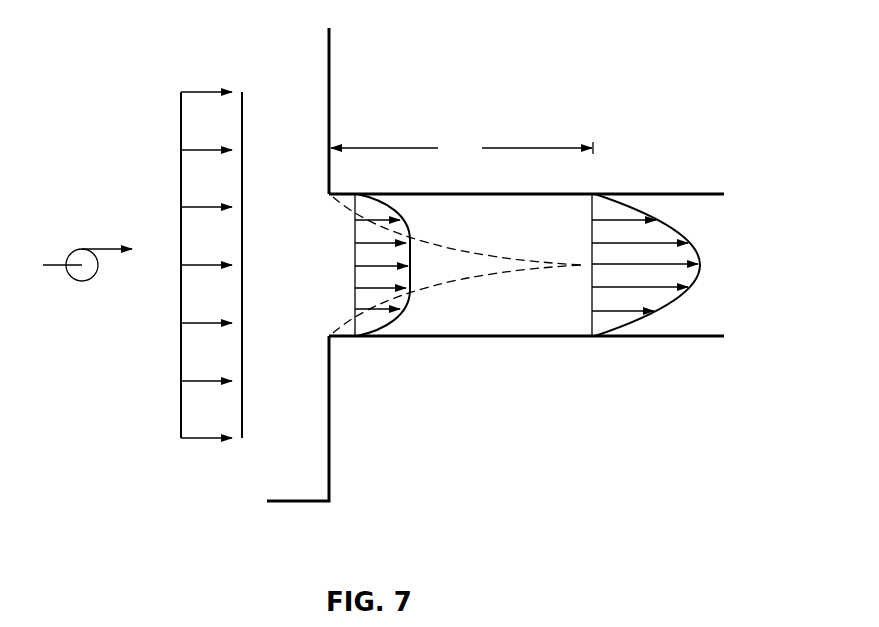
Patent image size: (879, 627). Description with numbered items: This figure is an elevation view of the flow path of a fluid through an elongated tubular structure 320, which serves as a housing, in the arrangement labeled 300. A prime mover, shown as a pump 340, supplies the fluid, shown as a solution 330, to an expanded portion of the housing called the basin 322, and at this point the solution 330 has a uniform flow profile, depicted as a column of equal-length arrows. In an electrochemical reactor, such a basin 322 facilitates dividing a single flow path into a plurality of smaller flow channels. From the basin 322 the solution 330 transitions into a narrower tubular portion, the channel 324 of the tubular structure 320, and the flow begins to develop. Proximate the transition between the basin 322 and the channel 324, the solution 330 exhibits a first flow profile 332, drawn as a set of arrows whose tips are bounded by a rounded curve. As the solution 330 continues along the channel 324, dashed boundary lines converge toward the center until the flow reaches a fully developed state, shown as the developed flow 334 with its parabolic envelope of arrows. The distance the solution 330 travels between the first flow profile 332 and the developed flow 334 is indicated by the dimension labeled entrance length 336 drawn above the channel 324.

The flow system with uniform inlet velocity profile 300 is at (186, 46).
The tubular structure 320 is at (481, 423).
The basin 322 is at (298, 503).
The channel 324 is at (533, 338).
The solution 330 is at (301, 190).
The first flow profile 332 is at (384, 206).
The developed flow 334 is at (650, 211).
The entrance length 336 is at (462, 149).
The pump 340 is at (82, 281).